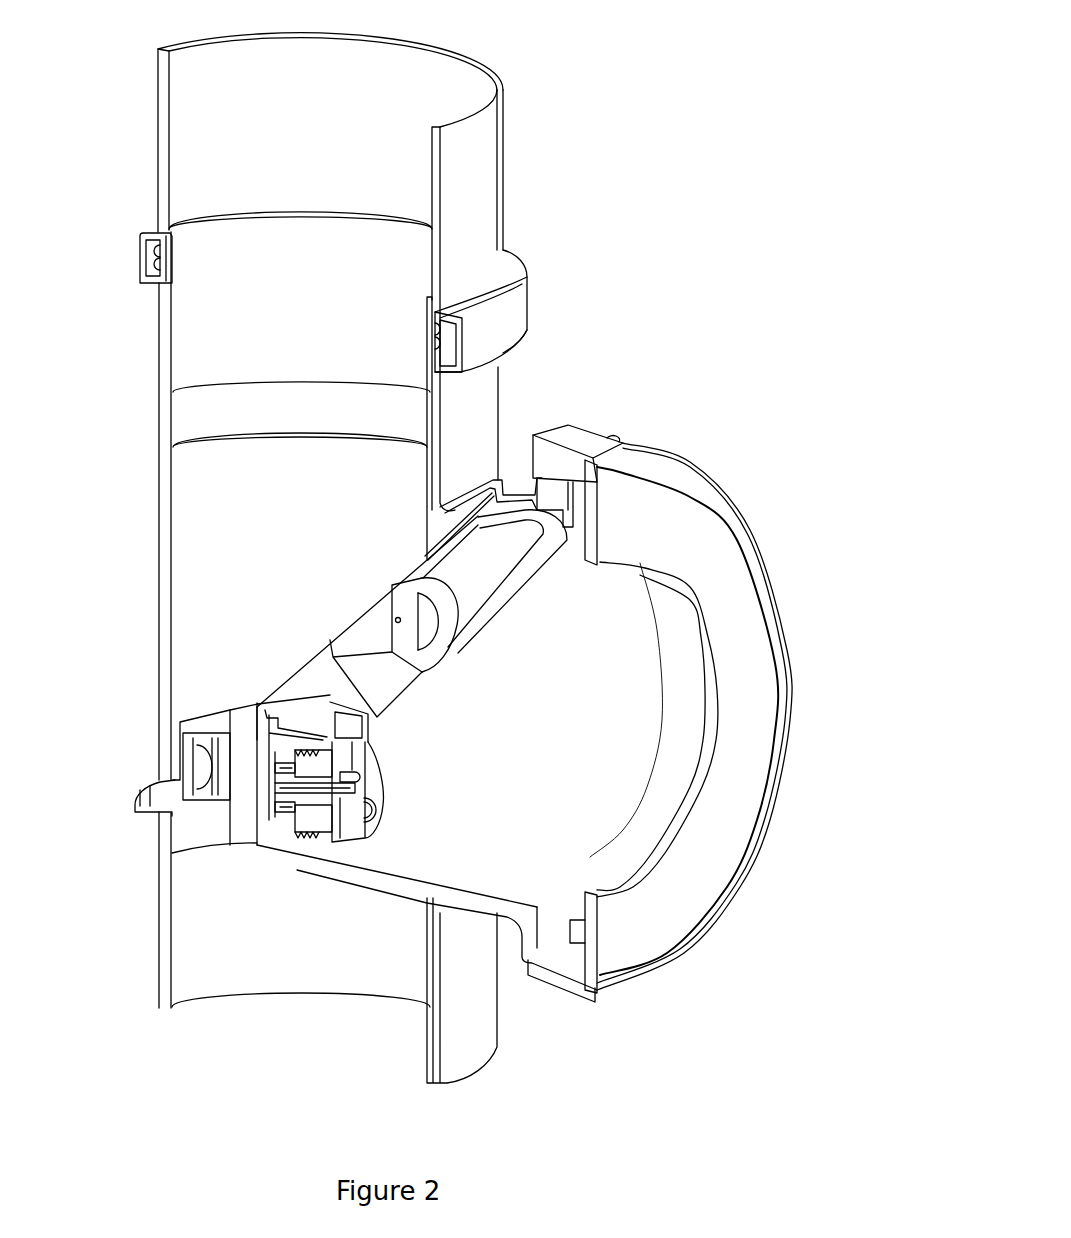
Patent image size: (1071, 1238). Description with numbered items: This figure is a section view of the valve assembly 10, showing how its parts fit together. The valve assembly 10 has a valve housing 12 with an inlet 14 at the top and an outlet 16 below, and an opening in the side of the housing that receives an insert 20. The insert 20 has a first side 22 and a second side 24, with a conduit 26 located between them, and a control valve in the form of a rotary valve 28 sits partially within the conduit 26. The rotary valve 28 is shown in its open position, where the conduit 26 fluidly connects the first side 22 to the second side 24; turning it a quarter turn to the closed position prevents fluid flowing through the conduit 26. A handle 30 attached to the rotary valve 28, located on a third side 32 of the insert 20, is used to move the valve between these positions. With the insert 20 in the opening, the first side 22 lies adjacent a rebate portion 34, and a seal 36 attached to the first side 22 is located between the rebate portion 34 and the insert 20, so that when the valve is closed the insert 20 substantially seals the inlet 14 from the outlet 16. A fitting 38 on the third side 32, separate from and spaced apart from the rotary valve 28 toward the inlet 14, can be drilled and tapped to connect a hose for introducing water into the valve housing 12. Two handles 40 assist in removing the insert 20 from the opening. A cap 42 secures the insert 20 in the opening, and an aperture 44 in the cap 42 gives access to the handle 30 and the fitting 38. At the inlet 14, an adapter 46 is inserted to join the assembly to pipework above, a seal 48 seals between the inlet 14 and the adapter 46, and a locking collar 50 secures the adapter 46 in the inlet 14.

The valve assembly 10 is at (723, 147).
The valve housing 12 is at (485, 414).
The inlet 14 is at (204, 452).
The outlet 16 is at (197, 990).
The insert 20 is at (492, 905).
The first side 22 is at (290, 682).
The second side 24 is at (335, 862).
The conduit 26 is at (242, 822).
The rotary valve 28 is at (225, 785).
The handle 30 is at (352, 775).
The third side 32 is at (545, 651).
The rebate portion 34 is at (445, 522).
The seal 36 is at (162, 782).
The fitting 38 is at (430, 633).
The handles 40 is at (552, 498).
The cap 42 is at (740, 597).
The aperture 44 is at (685, 758).
The adapter 46 is at (193, 100).
The seal 48 is at (160, 276).
The locking collar 50 is at (520, 304).